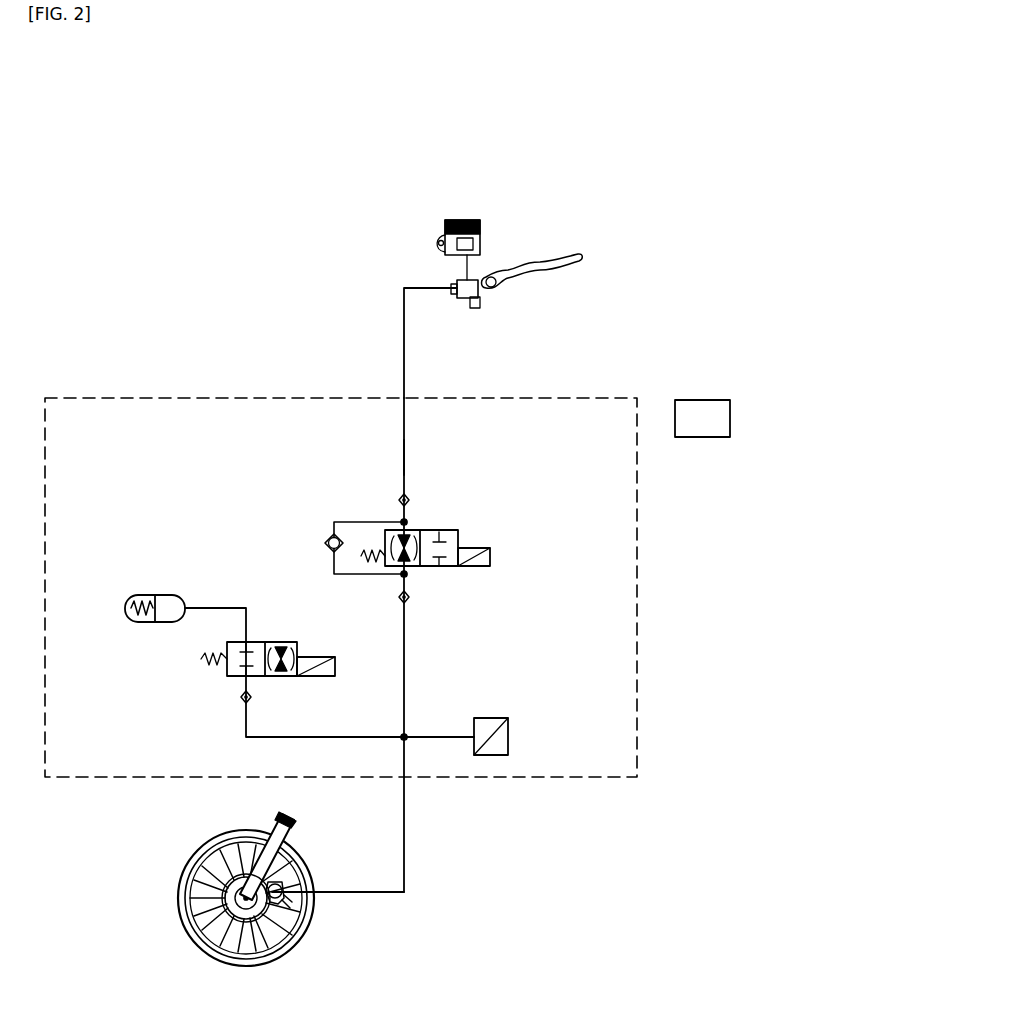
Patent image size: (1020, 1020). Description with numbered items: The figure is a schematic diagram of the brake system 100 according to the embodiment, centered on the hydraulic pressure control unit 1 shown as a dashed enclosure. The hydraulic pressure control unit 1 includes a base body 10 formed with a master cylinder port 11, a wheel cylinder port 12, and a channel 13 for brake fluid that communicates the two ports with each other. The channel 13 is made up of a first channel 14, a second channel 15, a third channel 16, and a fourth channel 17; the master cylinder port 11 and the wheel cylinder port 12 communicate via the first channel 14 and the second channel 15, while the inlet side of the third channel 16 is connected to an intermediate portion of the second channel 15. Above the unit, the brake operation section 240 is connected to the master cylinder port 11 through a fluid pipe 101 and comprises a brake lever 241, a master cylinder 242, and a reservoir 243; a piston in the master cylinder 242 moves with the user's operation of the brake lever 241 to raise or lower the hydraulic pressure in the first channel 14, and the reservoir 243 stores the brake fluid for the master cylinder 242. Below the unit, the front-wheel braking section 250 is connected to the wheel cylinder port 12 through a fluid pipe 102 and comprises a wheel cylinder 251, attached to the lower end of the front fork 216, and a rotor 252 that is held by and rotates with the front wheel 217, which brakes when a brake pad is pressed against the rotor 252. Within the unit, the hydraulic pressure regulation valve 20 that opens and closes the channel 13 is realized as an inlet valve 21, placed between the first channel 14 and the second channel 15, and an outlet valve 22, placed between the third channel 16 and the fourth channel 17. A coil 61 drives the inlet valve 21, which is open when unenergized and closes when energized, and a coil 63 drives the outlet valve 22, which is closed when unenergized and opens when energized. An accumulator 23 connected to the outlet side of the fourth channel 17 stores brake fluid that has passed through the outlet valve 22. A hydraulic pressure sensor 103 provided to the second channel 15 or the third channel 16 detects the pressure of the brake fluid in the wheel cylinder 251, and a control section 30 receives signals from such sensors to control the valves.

The brake system 100 is at (649, 166).
The hydraulic pressure control unit 1 is at (137, 389).
The base body 10 is at (598, 779).
The master cylinder port 11 is at (403, 397).
The wheel cylinder port 12 is at (405, 786).
The channel 13 is at (388, 456).
The first channel 14 is at (405, 472).
The second channel 15 is at (405, 700).
The third channel 16 is at (295, 736).
The fourth channel 17 is at (215, 608).
The hydraulic pressure regulation valve 20 is at (228, 520).
The inlet valve 21 is at (386, 529).
The outlet valve 22 is at (292, 642).
The accumulator 23 is at (148, 594).
The control section 30 is at (712, 398).
The coil 61 is at (478, 548).
The coil 63 is at (320, 657).
The fluid pipe 101 is at (430, 284).
The fluid pipe 102 is at (406, 868).
The hydraulic pressure sensor 103 is at (509, 734).
The front fork 216 is at (251, 842).
The front wheel 217 is at (196, 934).
The brake operation section 240 is at (516, 232).
The brake lever 241 is at (567, 258).
The master cylinder 242 is at (469, 300).
The reservoir 243 is at (456, 220).
The front-wheel braking section 250 is at (300, 915).
The wheel cylinder 251 is at (298, 858).
The rotor 252 is at (255, 916).